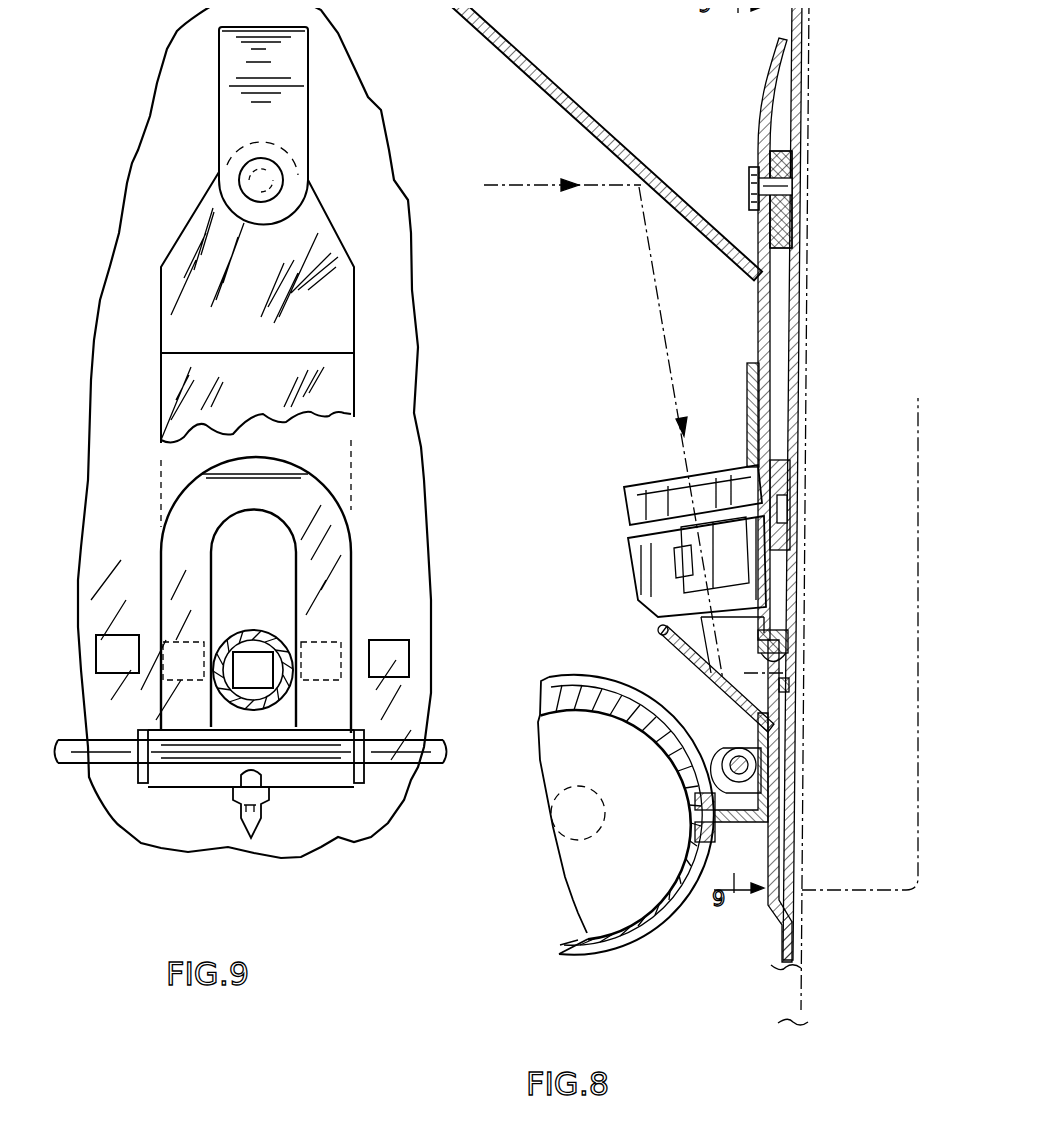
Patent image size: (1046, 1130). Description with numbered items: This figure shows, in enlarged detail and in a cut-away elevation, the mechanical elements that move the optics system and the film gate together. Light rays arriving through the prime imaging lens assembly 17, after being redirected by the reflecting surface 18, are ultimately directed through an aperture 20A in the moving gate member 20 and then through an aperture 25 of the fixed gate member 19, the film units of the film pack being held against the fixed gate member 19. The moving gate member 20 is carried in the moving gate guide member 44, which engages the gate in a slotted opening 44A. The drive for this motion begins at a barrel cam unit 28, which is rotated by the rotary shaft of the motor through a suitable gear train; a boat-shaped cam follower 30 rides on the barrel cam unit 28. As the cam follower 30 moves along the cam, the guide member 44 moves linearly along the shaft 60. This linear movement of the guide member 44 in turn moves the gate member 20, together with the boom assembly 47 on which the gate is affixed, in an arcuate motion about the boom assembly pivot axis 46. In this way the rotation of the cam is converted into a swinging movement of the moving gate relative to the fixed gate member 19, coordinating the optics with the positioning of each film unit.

In FIG. 8, the prime imaging lens assembly 17 is at (615, 572).
In FIG. 8, the reflecting surface 18 is at (668, 637).
In FIG. 9, the fixed gate member 19 is at (408, 463).
In FIG. 8, the fixed gate member 19 is at (796, 568).
In FIG. 9, the moving gate member 20 is at (276, 636).
In FIG. 9, the aperture 20A is at (246, 640).
In FIG. 8, the aperture 20A is at (790, 660).
In FIG. 9, the aperture 25 is at (110, 668).
In FIG. 8, the aperture 25 is at (793, 687).
In FIG. 8, the barrel cam unit 28 is at (582, 922).
In FIG. 9, the cam follower 30 is at (223, 822).
In FIG. 8, the cam follower 30 is at (722, 830).
In FIG. 9, the moving gate guide member 44 is at (337, 557).
In FIG. 8, the moving gate guide member 44 is at (776, 512).
In FIG. 9, the slotted opening 44A is at (285, 530).
In FIG. 8, the slotted opening 44A is at (789, 530).
In FIG. 9, the boom assembly pivot axis 46 is at (282, 176).
In FIG. 8, the boom assembly pivot axis 46 is at (745, 186).
In FIG. 9, the boom assembly 47 is at (353, 261).
In FIG. 8, the boom assembly 47 is at (741, 378).
In FIG. 9, the shaft 60 is at (72, 765).
In FIG. 8, the shaft 60 is at (742, 752).